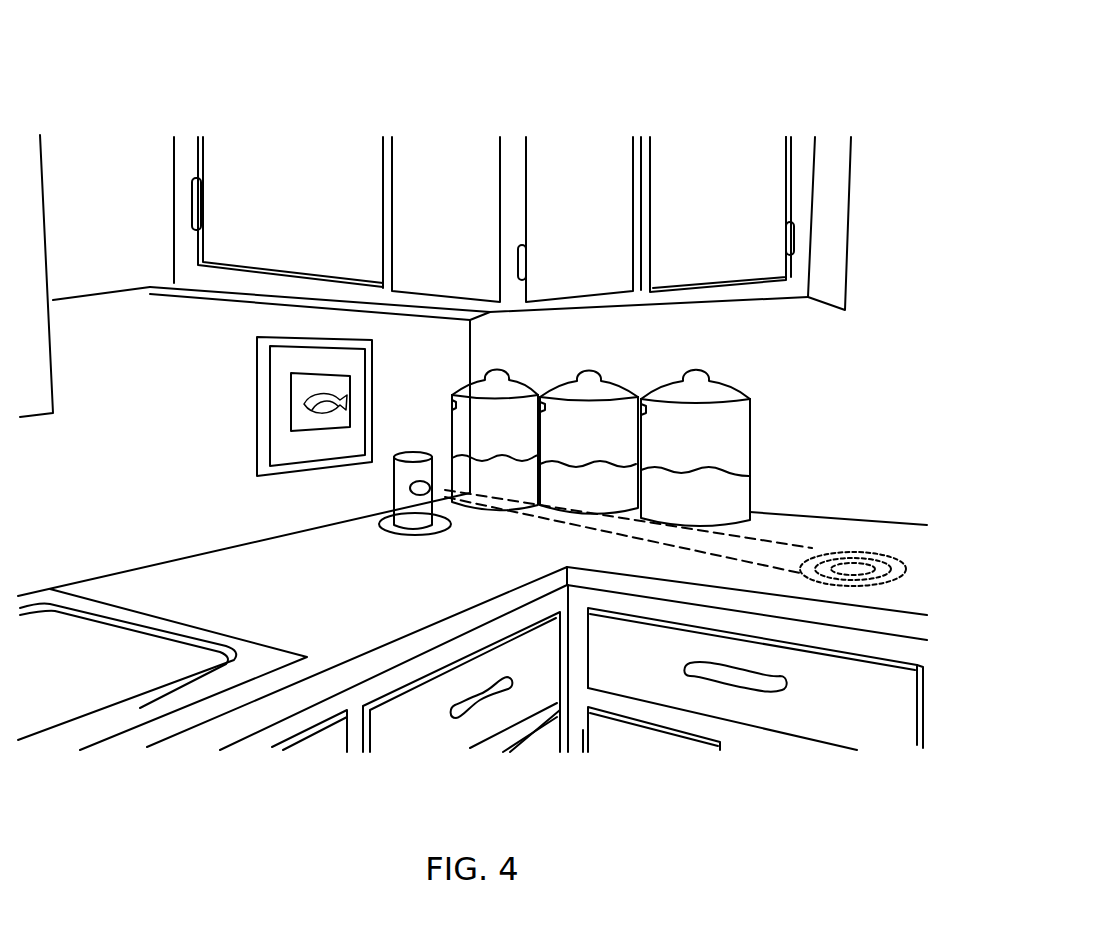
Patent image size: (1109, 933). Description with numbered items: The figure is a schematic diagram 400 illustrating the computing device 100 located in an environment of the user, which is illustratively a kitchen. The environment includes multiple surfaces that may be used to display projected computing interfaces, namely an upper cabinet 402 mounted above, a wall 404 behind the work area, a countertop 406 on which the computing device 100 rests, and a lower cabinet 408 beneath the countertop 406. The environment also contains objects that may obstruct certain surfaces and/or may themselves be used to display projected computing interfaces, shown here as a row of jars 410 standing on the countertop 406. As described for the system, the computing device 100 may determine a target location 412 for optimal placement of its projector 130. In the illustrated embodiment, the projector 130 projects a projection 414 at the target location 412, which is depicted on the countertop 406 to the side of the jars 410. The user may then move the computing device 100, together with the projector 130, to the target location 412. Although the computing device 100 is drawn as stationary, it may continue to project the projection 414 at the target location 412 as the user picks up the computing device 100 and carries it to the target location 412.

The diagram 400 is at (883, 85).
The upper cabinet 402 is at (325, 166).
The wall 404 is at (152, 393).
The countertop 406 is at (260, 570).
The lower cabinet 408 is at (413, 727).
The jars 410 is at (728, 420).
The target location 412 is at (855, 570).
The projection 414 is at (817, 548).
The computing device 100 is at (412, 470).
The projector 130 is at (410, 487).